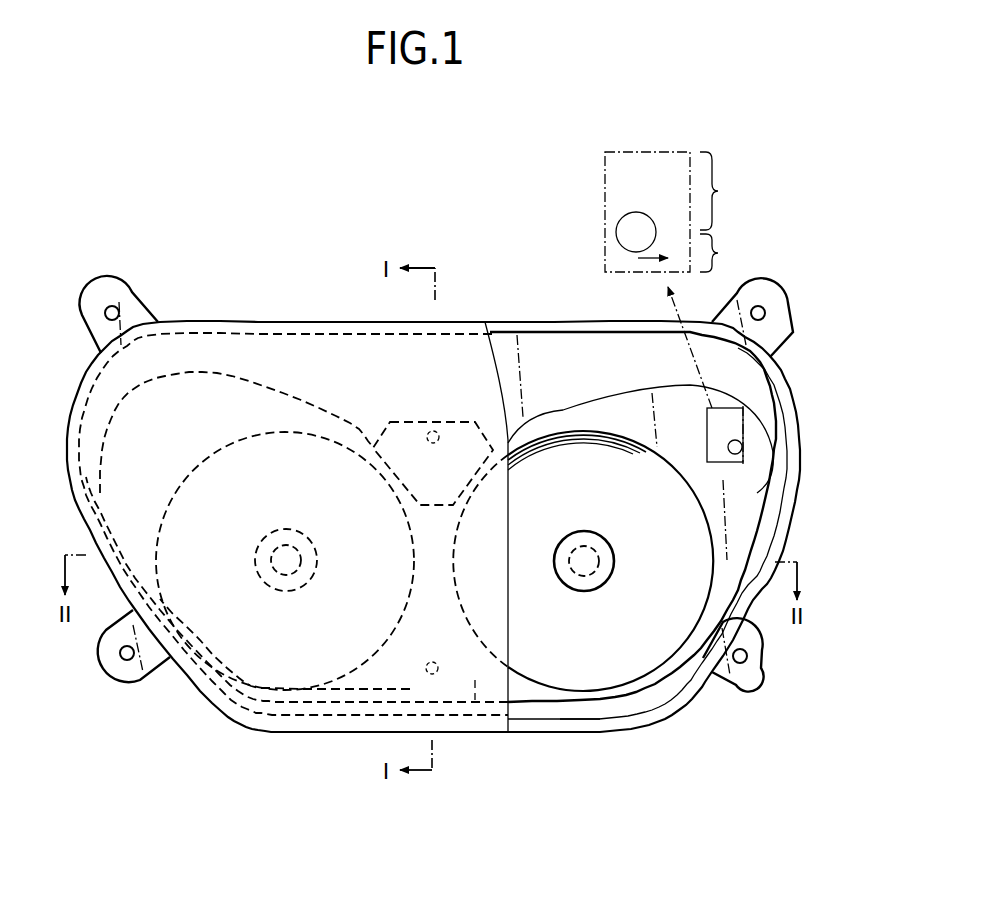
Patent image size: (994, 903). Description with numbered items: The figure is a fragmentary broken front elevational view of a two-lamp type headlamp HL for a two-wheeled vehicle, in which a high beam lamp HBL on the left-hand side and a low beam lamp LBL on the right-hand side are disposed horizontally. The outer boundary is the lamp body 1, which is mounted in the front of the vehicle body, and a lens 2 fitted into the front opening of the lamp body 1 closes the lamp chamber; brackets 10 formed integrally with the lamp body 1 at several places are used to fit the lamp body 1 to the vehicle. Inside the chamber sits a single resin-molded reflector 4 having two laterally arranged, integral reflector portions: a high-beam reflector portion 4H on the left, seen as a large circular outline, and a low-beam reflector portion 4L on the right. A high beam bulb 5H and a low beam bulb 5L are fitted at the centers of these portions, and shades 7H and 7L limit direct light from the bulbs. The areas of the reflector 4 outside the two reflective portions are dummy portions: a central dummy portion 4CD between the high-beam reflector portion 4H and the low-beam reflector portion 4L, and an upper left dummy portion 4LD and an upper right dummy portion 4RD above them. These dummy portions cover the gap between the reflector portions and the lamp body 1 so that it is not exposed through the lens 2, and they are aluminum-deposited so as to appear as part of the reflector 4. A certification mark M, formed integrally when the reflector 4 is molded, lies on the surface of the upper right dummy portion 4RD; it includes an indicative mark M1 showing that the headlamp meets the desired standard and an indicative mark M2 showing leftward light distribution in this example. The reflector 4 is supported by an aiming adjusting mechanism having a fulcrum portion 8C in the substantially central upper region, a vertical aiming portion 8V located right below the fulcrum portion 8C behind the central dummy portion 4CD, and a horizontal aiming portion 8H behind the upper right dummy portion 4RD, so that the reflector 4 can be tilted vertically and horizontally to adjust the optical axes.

The lamp body 1 is at (516, 322).
The lens 2 is at (316, 352).
The reflector 4 is at (548, 705).
The high-beam reflector portion 4H is at (283, 660).
The low-beam reflector portion 4L is at (660, 690).
The upper left dummy portion 4LD is at (167, 417).
The upper right dummy portion 4RD is at (628, 393).
The central dummy portion 4CD is at (475, 700).
The high beam bulb 5H is at (290, 545).
The low beam bulb 5L is at (587, 532).
The shade 7H is at (290, 576).
The shade 7L is at (592, 592).
The fulcrum portion 8C is at (433, 430).
The horizontal aiming portion 8H is at (745, 443).
The vertical aiming portion 8V is at (429, 679).
The bracket 10 is at (113, 287).
The headlamp HL is at (250, 306).
The high beam lamp HBL is at (230, 691).
The low beam lamp LBL is at (592, 720).
The certification mark M is at (657, 150).
The indicative mark M1 is at (730, 191).
The indicative mark M2 is at (730, 253).